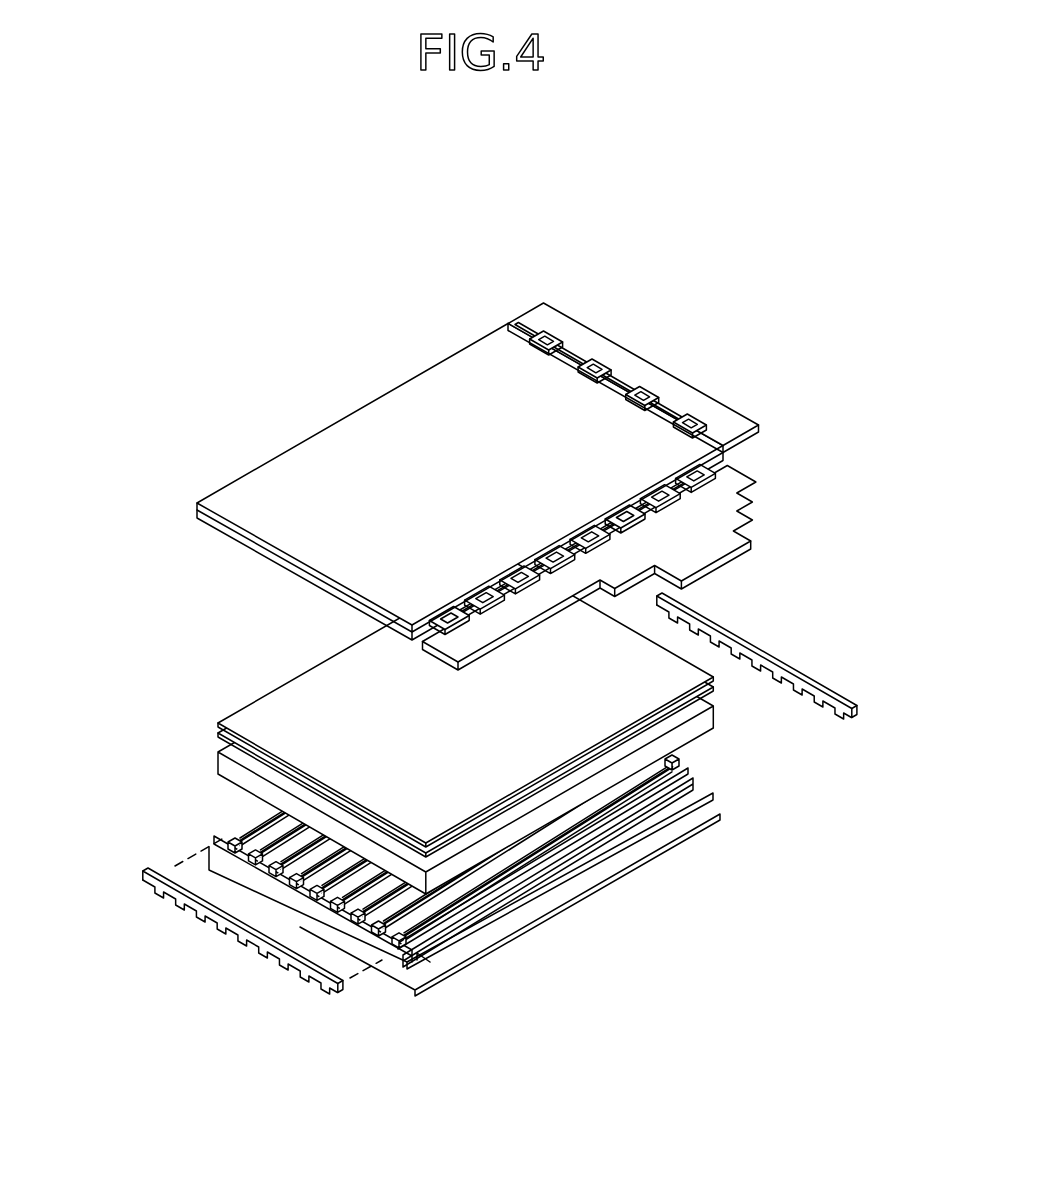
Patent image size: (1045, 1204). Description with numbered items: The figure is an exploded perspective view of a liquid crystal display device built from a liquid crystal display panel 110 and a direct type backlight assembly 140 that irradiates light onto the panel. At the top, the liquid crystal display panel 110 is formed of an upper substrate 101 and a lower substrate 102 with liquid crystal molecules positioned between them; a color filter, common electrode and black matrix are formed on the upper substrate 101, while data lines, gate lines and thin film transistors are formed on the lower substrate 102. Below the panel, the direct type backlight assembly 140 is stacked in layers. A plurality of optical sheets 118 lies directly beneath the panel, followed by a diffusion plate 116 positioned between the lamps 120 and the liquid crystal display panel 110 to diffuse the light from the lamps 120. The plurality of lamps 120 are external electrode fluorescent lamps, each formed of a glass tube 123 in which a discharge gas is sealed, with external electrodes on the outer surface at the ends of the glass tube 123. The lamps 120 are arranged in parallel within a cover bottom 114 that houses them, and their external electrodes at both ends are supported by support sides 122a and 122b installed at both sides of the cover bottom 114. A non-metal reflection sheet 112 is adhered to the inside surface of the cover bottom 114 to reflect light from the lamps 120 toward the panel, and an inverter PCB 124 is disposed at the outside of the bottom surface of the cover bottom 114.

The liquid crystal display panel 110 is at (110, 492).
The upper substrate 101 is at (200, 503).
The lower substrate 102 is at (200, 516).
The direct type backlight assembly 140 is at (775, 612).
The optical sheets 118 is at (694, 689).
The diffusion plate 116 is at (713, 718).
The cover bottom 114 is at (713, 796).
The non-metal reflection sheet 112 is at (650, 800).
The glass tube 123 is at (582, 826).
The lamps 120 is at (512, 880).
The inverter PCB 124 is at (415, 968).
The support side 122a is at (148, 868).
The support side 122b is at (856, 690).